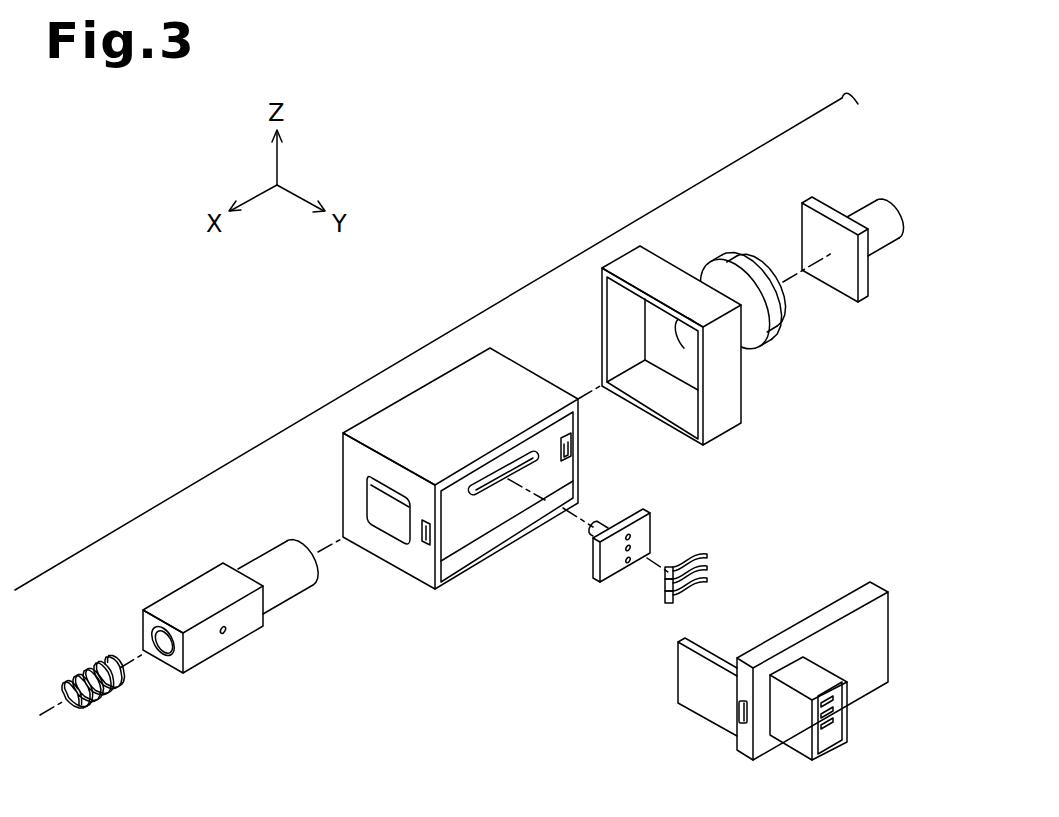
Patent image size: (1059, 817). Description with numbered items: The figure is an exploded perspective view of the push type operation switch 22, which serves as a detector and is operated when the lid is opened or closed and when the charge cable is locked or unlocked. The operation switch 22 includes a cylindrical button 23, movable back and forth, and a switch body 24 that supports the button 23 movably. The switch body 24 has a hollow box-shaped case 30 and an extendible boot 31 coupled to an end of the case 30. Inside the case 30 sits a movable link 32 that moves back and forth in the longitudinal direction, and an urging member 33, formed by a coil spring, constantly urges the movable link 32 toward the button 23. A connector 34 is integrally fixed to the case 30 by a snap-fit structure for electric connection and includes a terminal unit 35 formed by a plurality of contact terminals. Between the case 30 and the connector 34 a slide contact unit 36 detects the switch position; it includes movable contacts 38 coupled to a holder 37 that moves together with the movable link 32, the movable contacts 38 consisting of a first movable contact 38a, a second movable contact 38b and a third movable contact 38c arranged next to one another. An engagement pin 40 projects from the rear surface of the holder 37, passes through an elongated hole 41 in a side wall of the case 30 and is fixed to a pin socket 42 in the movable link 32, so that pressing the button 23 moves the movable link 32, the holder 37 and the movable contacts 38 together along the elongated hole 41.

The operation switch 22 is at (211, 359).
The button 23 is at (862, 207).
The switch body 24 is at (445, 335).
The case 30 is at (460, 447).
The boot 31 is at (704, 259).
The movable link 32 is at (230, 619).
The urging member 33 is at (88, 665).
The connector 34 is at (790, 695).
The terminal unit 35 is at (834, 722).
The slide contact unit 36 is at (822, 510).
The holder 37 is at (600, 521).
The movable contacts 38 is at (754, 551).
The first movable contact 38a is at (710, 598).
The second movable contact 38b is at (712, 568).
The third movable contact 38c is at (704, 556).
The engagement pin 40 is at (588, 534).
The elongated hole 41 is at (483, 487).
The pin socket 42 is at (226, 635).